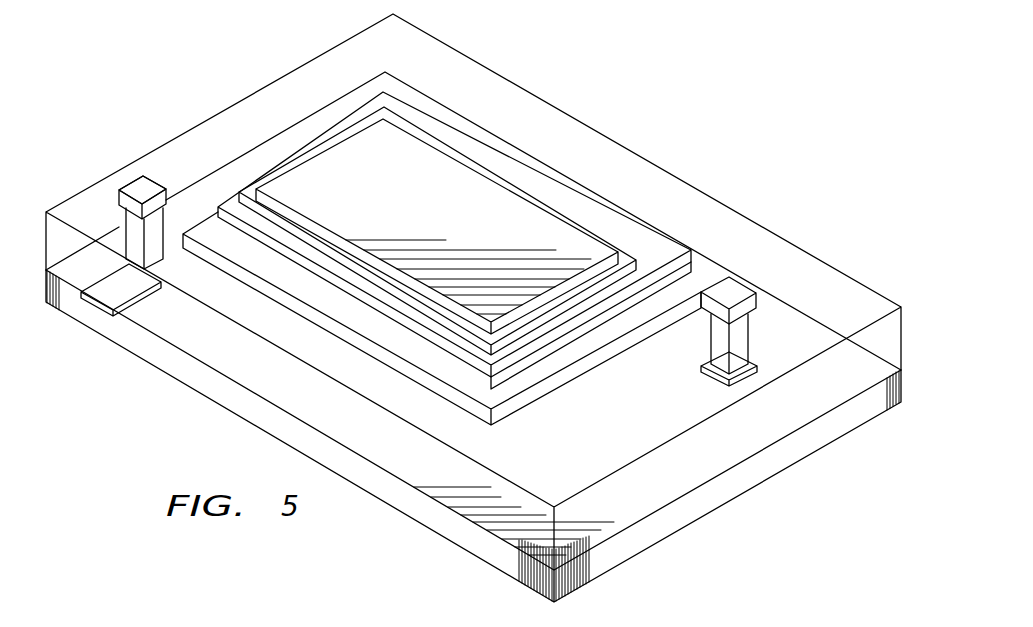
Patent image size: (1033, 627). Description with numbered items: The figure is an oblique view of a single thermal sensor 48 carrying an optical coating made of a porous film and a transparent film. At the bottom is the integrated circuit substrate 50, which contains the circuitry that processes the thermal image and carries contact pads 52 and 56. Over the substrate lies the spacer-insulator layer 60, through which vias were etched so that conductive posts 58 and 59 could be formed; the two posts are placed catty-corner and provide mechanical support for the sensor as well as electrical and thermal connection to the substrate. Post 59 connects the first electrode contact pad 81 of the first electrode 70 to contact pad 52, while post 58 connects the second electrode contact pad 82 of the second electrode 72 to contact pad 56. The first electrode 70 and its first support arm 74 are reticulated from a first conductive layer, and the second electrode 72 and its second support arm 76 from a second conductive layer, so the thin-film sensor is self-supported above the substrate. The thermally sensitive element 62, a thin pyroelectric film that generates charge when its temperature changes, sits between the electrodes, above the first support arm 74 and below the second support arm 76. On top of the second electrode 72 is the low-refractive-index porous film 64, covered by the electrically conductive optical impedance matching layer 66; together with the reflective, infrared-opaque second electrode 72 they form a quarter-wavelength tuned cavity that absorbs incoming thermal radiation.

The thermal sensor 48 is at (694, 105).
The integrated circuit substrate 50 is at (805, 446).
The contact pad 52 is at (710, 372).
The contact pad 56 is at (120, 288).
The post 58 is at (123, 233).
The post 59 is at (708, 340).
The spacer-insulator layer 60 is at (718, 210).
The thermally sensitive element 62 is at (117, 200).
The porous film 64 is at (625, 257).
The optical impedance matching layer 66 is at (390, 214).
The first electrode 70 is at (374, 267).
The second electrode 72 is at (226, 200).
The first support arm 74 is at (594, 370).
The second support arm 76 is at (290, 130).
The first electrode contact pad 81 is at (752, 315).
The second electrode contact pad 82 is at (135, 183).